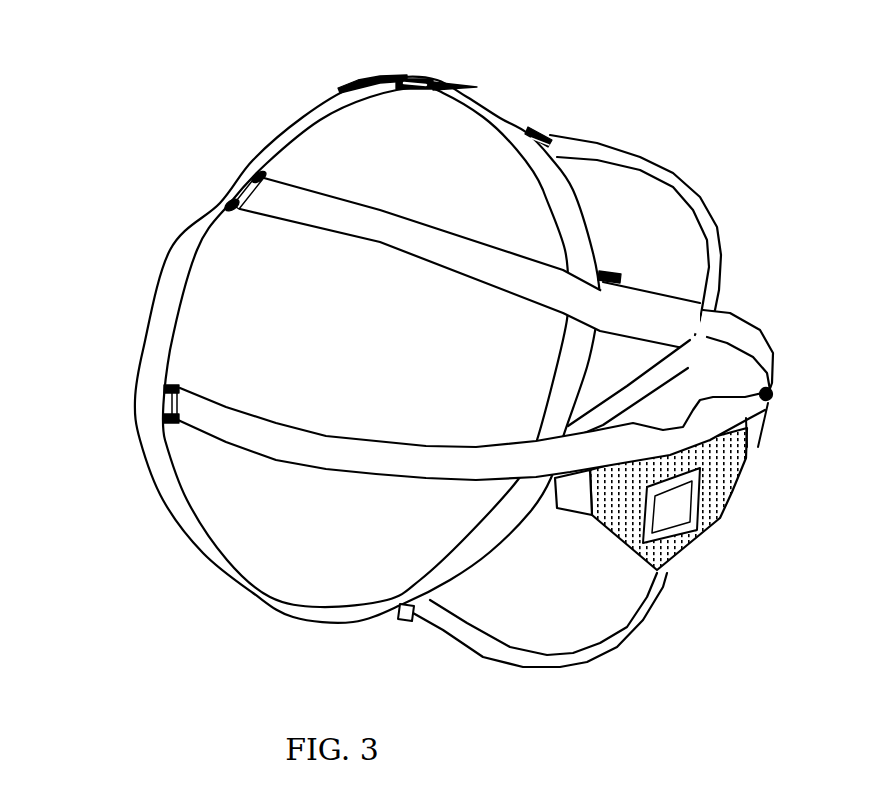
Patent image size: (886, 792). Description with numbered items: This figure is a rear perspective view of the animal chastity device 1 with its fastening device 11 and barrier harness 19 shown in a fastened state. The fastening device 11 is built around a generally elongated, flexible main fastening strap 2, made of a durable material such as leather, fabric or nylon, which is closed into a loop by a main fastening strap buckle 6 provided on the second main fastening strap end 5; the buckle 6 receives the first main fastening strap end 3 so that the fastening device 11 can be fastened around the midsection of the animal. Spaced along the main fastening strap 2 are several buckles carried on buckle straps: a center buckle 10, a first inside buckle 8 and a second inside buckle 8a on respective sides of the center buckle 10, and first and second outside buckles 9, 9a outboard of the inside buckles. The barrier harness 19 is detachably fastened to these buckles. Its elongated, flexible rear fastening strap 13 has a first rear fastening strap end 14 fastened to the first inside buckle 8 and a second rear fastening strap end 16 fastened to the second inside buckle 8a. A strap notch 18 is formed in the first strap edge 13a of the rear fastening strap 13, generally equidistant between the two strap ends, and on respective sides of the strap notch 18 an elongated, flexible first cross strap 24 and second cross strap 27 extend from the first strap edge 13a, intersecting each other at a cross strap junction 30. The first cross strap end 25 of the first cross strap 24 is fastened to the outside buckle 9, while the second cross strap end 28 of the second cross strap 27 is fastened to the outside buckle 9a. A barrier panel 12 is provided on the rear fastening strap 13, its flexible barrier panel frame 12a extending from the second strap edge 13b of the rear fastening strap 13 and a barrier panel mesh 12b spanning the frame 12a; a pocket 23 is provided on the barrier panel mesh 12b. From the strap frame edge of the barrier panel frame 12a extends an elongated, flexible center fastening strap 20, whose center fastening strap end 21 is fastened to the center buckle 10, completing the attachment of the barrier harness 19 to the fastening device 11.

The animal chastity device 1 is at (118, 155).
The main fastening strap 2 is at (163, 300).
The first main fastening strap end 3 is at (346, 82).
The second main fastening strap end 5 is at (392, 90).
The main fastening strap buckle 6 is at (418, 80).
The first inside buckle 8 is at (132, 386).
The second inside buckle 8a is at (613, 277).
The first outside buckle 9 is at (551, 133).
The second outside buckle 9a is at (233, 208).
The center buckle 10 is at (405, 622).
The fastening device 11 is at (279, 110).
The barrier panel 12 is at (667, 517).
The barrier panel frame 12a is at (583, 519).
The barrier panel mesh 12b is at (613, 520).
The rear fastening strap 13 is at (509, 425).
The first strap edge 13a is at (330, 437).
The second strap edge 13b is at (320, 470).
The first rear fastening strap end 14 is at (163, 393).
The second rear fastening strap end 16 is at (557, 223).
The strap notch 18 is at (774, 397).
The barrier harness 19 is at (741, 303).
The center fastening strap 20 is at (540, 647).
The center fastening strap end 21 is at (440, 602).
The pocket 23 is at (707, 492).
The first cross strap 24 is at (690, 176).
The first cross strap end 25 is at (543, 128).
The second cross strap 27 is at (523, 282).
The second cross strap end 28 is at (238, 195).
The cross strap junction 30 is at (660, 350).